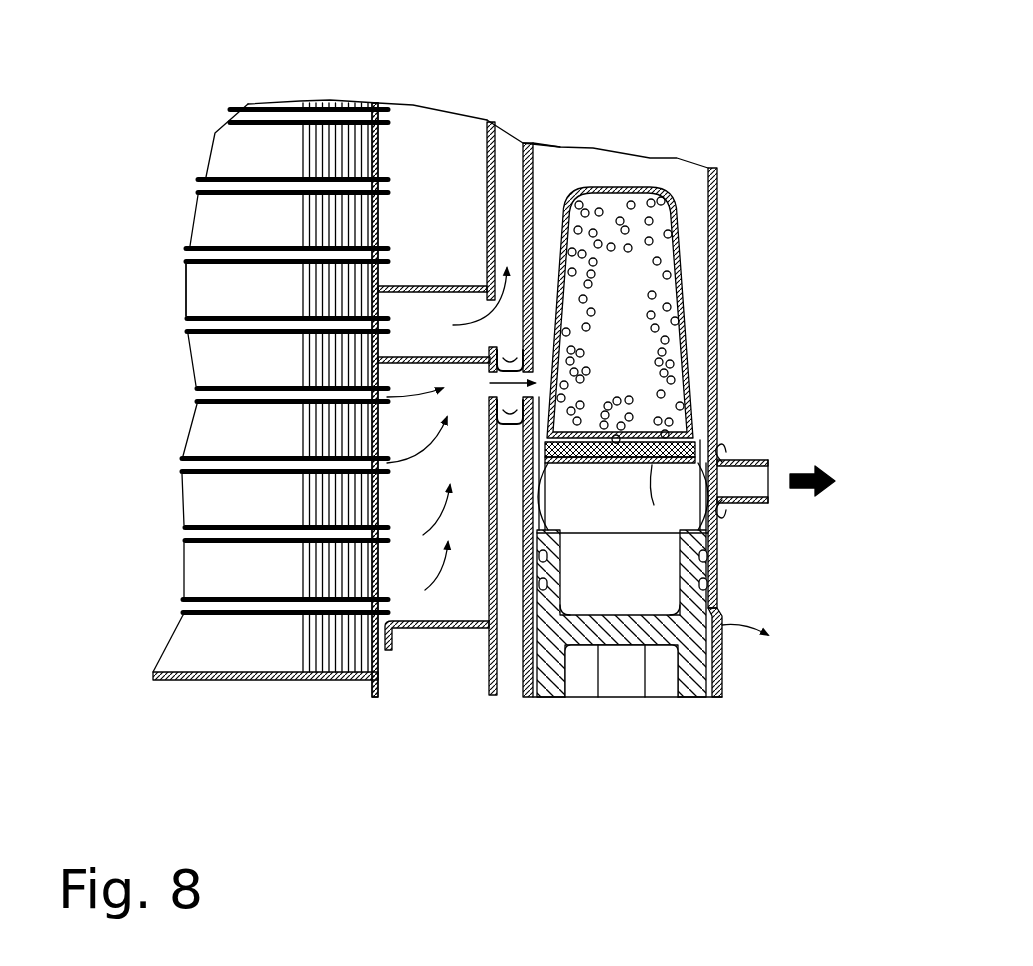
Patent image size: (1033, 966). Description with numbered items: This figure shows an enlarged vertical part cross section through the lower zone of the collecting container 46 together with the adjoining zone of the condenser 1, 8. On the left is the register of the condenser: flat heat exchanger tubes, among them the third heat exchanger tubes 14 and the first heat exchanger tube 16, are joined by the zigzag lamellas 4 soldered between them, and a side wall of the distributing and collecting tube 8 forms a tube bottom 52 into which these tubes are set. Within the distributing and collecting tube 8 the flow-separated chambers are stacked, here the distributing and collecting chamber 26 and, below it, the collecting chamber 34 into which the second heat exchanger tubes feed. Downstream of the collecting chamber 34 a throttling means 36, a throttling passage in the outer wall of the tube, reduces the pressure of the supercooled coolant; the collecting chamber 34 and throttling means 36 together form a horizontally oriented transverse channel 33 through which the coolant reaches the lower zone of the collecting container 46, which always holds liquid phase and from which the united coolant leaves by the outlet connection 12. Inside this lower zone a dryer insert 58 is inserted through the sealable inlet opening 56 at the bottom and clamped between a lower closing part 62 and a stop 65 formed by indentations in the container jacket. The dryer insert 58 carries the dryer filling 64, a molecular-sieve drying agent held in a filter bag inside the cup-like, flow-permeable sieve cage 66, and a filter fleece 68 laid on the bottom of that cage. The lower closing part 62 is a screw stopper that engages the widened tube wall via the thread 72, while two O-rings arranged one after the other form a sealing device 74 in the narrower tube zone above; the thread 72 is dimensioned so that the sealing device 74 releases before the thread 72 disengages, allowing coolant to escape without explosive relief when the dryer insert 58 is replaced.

The heat exchanger 1 is at (223, 398).
The distributing and collecting tube 8 is at (223, 398).
The zigzag lamellas 4 is at (303, 559).
The outlet connection 12 is at (755, 460).
The third heat exchanger tubes 14 is at (226, 361).
The first heat exchanger tube 16 is at (185, 325).
The distributing and collecting chamber 26 is at (455, 228).
The transverse channel 33 is at (505, 427).
The collecting chamber 34 is at (428, 446).
The throttling means 36 is at (571, 362).
The collecting container 46 is at (585, 186).
The tube bottom 52 is at (375, 150).
The inlet opening 56 is at (525, 697).
The dryer insert 58 is at (690, 207).
The lower closing part 62 is at (693, 670).
The dryer filling 64 is at (640, 290).
The stop 65 is at (702, 420).
The basket 66 is at (683, 313).
The filter fleece 68 is at (627, 440).
The thread 72 is at (722, 655).
The sealing device 74 is at (688, 570).